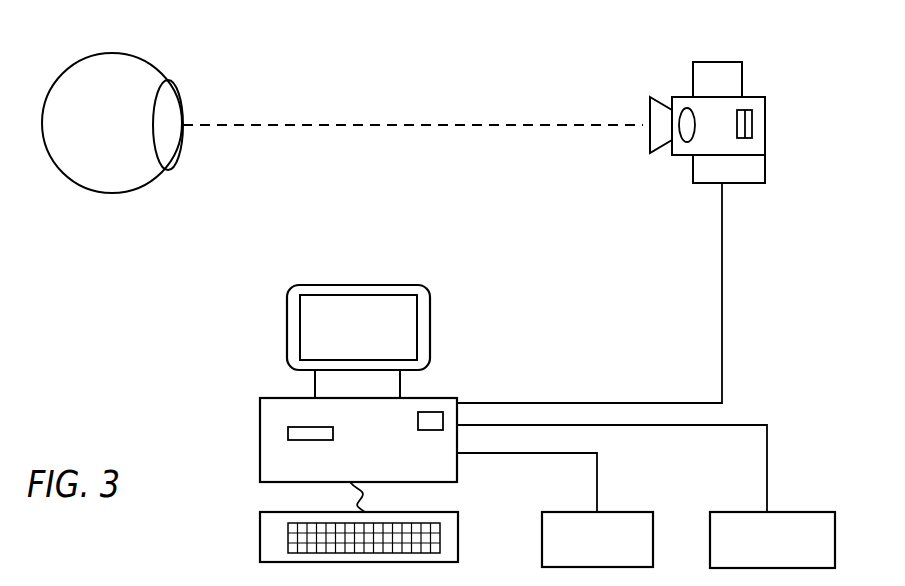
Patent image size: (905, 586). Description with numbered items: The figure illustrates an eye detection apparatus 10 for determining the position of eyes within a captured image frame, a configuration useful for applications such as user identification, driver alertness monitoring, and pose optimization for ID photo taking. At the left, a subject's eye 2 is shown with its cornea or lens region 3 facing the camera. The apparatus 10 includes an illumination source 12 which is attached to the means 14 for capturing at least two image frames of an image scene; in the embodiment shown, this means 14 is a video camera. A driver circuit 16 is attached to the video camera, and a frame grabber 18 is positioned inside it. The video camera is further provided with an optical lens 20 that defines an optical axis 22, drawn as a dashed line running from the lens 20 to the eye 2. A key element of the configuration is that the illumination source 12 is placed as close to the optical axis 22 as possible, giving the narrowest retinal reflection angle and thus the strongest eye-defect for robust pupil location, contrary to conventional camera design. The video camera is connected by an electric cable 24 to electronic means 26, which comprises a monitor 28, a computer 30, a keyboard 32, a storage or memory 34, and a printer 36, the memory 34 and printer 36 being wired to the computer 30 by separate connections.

The eye 2 is at (120, 187).
The cornea / lens of eye 3 is at (168, 93).
The eye imaging system 10 is at (753, 136).
The camera top unit 12 is at (715, 62).
The camera body 14 is at (758, 127).
The camera base unit 16 is at (757, 173).
The camera sensor / detector 18 is at (745, 110).
The camera lens 20 is at (683, 140).
The optical axis 22 is at (473, 125).
The cable / data line 24 is at (570, 403).
The computer system 26 is at (332, 423).
The monitor / display 28 is at (427, 323).
The computer processing unit 30 is at (273, 462).
The keyboard 32 is at (270, 530).
The memory 34 is at (615, 512).
The printer 36 is at (790, 512).